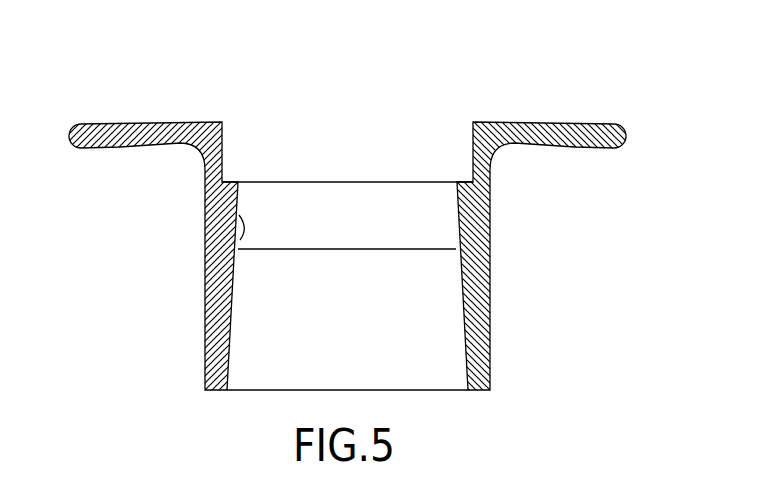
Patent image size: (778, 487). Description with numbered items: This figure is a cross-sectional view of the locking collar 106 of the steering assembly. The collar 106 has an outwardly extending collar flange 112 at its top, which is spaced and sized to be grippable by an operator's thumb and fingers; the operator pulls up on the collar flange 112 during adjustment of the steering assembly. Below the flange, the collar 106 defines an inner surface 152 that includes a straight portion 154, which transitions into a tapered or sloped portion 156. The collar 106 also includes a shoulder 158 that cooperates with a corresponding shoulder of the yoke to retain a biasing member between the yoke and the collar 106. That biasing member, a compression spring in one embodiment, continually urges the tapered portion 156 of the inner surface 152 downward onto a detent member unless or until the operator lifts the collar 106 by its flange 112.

The collar 106 is at (343, 222).
The collar flange 112 is at (140, 122).
The inner surface 152 is at (453, 224).
The straight portion 154 is at (240, 240).
The tapered portion 156 is at (228, 340).
The shoulder 158 is at (230, 181).